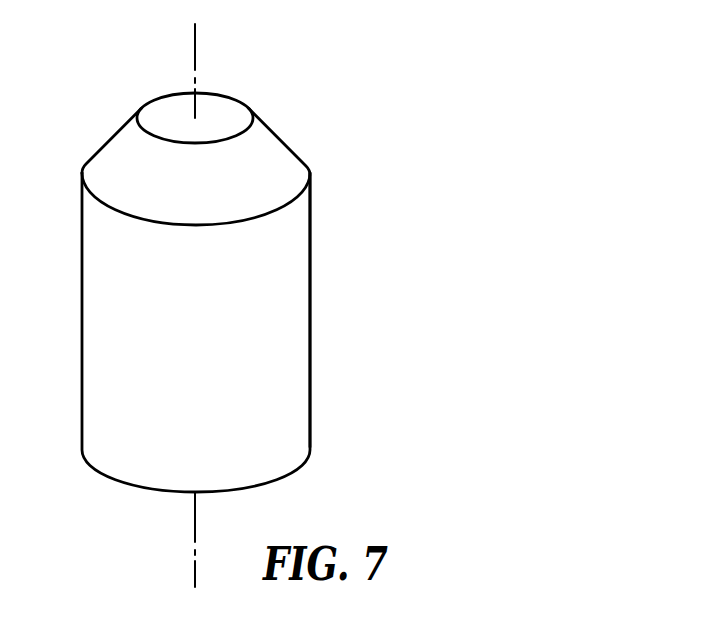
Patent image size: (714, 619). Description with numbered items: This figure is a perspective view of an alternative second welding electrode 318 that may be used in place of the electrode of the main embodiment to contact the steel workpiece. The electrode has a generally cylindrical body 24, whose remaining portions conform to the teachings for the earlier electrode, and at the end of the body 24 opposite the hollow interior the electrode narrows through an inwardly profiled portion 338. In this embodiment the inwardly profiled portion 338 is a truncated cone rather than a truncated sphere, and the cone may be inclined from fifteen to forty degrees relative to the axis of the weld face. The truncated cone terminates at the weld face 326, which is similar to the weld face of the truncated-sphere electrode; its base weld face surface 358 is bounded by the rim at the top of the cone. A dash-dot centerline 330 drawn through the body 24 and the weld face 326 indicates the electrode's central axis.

The body 24 is at (105, 337).
The second welding electrode 318 is at (311, 270).
The weld face 326 is at (170, 110).
The longitudinal axis 330 is at (196, 66).
The inwardly profiled portion 338 is at (285, 156).
The rim of opening 358 is at (218, 117).